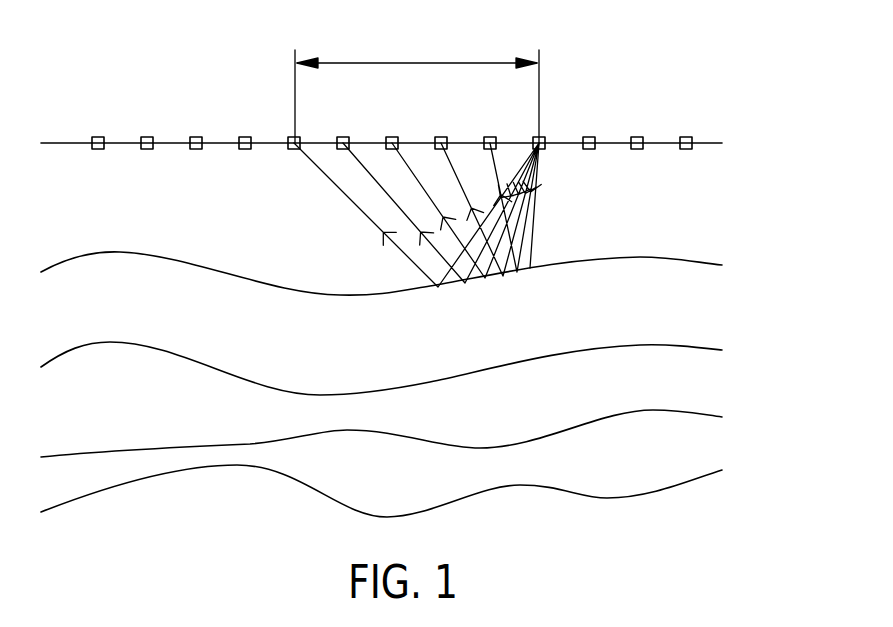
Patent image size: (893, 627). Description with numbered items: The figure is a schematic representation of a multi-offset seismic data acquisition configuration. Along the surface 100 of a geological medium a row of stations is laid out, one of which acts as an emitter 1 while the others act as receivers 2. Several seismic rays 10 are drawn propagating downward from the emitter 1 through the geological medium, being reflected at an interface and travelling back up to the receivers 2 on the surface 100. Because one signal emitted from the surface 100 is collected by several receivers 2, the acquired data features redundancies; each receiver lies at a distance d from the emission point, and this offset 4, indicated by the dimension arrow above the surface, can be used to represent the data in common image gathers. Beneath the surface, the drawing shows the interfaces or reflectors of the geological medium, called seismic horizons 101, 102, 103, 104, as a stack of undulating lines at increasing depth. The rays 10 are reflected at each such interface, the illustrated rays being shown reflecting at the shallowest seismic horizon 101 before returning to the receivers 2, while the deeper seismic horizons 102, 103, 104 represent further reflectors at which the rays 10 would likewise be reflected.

The emitter 1 is at (546, 137).
The receivers 2 is at (292, 137).
The offset 4 is at (430, 43).
The seismic rays 10 is at (533, 238).
The surface 100 is at (70, 140).
The seismic horizon 101 is at (668, 259).
The seismic horizon 102 is at (668, 346).
The seismic horizon 103 is at (668, 411).
The seismic horizon 104 is at (668, 488).